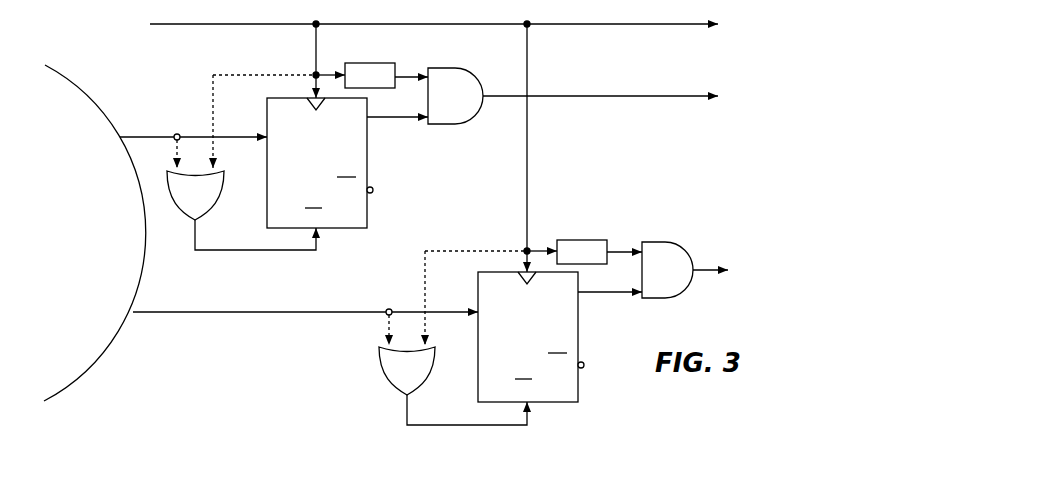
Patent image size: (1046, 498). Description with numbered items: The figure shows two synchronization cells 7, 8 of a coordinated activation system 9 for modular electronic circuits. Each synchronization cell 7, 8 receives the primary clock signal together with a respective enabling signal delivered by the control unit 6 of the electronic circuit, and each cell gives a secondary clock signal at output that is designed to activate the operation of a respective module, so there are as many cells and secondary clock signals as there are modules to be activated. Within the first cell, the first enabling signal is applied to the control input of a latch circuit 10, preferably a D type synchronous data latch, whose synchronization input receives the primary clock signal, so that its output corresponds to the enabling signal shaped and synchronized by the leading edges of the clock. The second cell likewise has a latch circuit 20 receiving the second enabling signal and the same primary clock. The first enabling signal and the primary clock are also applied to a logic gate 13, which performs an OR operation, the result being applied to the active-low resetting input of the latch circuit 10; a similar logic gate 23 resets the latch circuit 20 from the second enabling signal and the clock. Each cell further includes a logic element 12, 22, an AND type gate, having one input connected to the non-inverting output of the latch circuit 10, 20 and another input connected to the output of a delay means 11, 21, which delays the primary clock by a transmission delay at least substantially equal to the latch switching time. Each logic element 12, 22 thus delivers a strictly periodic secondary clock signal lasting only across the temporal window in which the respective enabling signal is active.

The control unit 6 is at (261, 233).
The synchronization cell 7 is at (402, 164).
The synchronization cell 8 is at (617, 342).
The coordinated activation system 9 is at (218, 347).
The latch circuit 10 is at (267, 109).
The delay means 11 is at (360, 63).
The logic element 12 is at (458, 68).
The logic gate 13 is at (213, 207).
The latch circuit 20 is at (478, 285).
The delay means 21 is at (568, 240).
The logic element 22 is at (672, 243).
The logic gate 23 is at (379, 376).